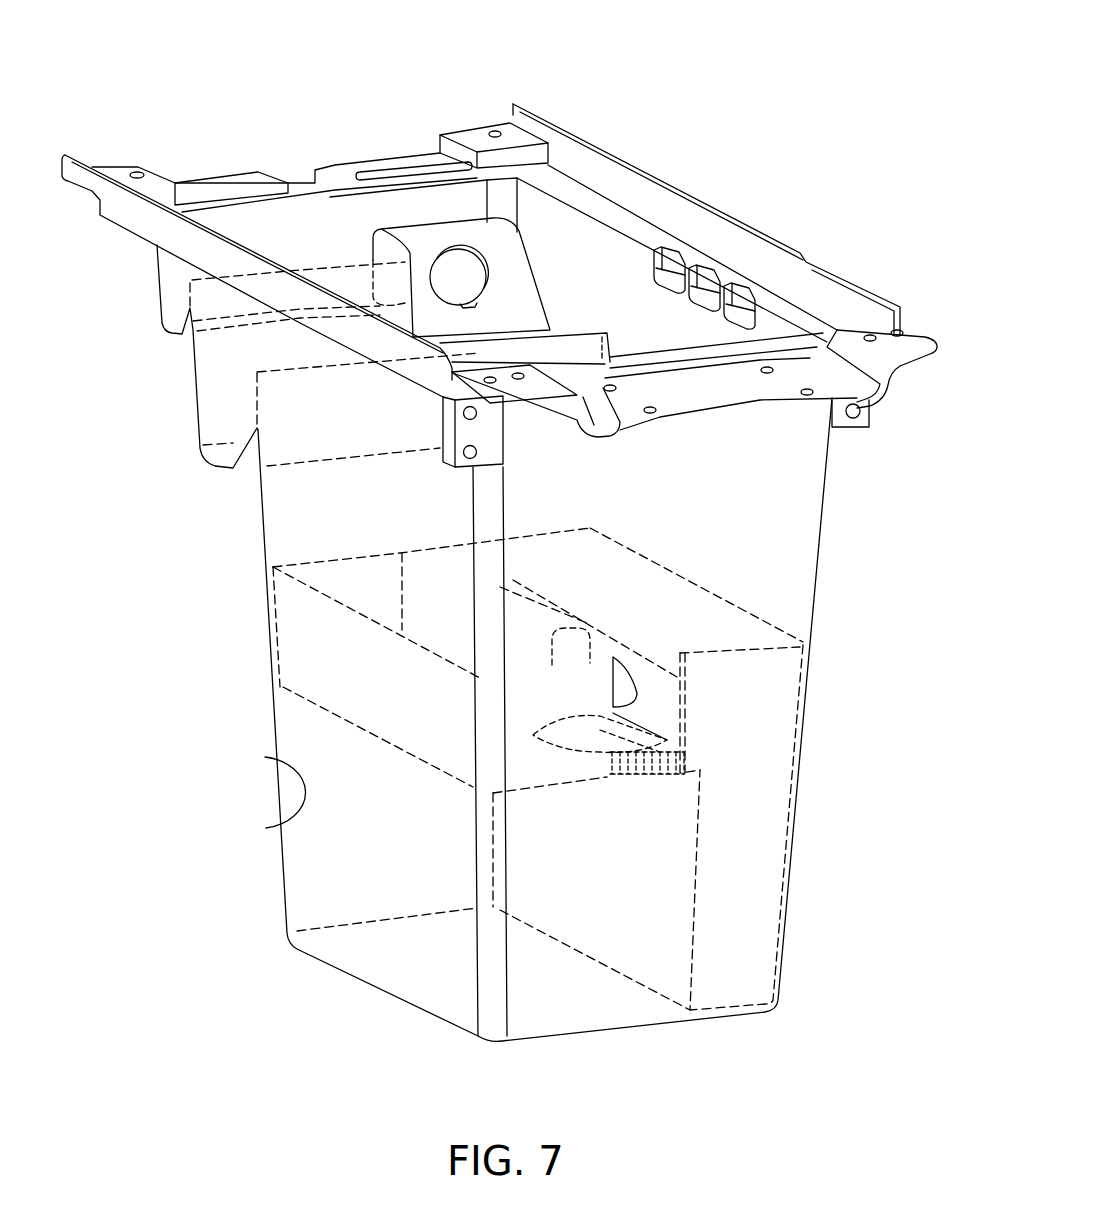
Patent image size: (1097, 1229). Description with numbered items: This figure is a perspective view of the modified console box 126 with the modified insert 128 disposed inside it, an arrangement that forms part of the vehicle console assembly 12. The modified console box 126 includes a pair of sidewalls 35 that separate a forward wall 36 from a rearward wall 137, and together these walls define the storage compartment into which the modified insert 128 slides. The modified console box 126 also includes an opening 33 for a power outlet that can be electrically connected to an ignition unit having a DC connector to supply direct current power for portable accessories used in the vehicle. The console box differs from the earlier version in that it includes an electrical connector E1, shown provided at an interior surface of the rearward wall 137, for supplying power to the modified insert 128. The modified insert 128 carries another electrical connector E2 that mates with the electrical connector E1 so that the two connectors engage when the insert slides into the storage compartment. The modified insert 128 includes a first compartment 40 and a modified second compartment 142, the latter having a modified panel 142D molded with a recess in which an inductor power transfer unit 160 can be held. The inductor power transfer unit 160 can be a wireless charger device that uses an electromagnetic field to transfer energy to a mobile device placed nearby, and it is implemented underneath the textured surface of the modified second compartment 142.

The vehicle console assembly 12 is at (795, 52).
The modified console box 126 is at (768, 203).
The opening 33 is at (488, 276).
The sidewalls 35 is at (740, 497).
The forward wall 36 is at (440, 825).
The first compartment 40 is at (674, 511).
The modified insert 128 is at (561, 510).
The rearward wall 137 is at (488, 938).
The modified second compartment 142 is at (327, 538).
The modified panel 142D is at (497, 660).
The inductor power transfer unit 160 is at (647, 730).
The electrical connector E1 is at (637, 777).
The electrical connector E2 is at (623, 735).